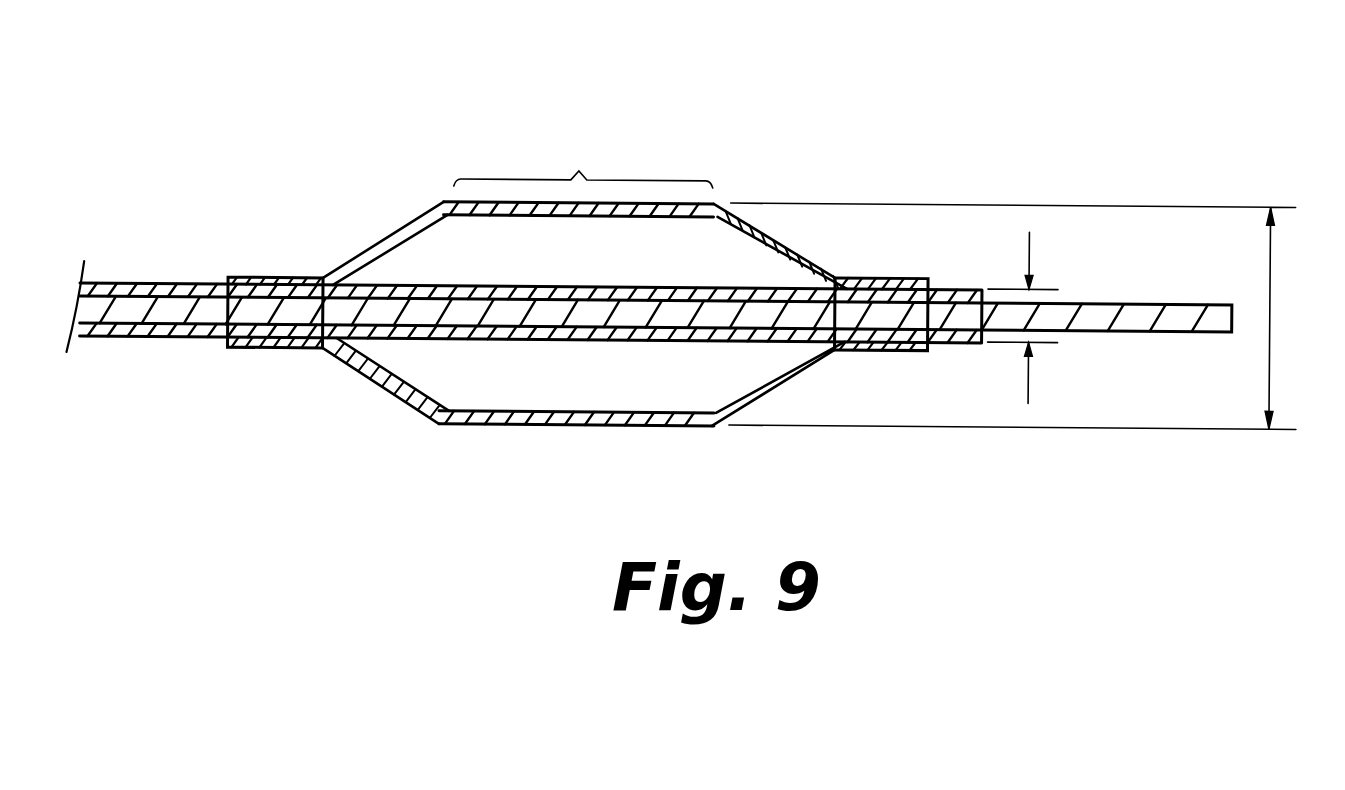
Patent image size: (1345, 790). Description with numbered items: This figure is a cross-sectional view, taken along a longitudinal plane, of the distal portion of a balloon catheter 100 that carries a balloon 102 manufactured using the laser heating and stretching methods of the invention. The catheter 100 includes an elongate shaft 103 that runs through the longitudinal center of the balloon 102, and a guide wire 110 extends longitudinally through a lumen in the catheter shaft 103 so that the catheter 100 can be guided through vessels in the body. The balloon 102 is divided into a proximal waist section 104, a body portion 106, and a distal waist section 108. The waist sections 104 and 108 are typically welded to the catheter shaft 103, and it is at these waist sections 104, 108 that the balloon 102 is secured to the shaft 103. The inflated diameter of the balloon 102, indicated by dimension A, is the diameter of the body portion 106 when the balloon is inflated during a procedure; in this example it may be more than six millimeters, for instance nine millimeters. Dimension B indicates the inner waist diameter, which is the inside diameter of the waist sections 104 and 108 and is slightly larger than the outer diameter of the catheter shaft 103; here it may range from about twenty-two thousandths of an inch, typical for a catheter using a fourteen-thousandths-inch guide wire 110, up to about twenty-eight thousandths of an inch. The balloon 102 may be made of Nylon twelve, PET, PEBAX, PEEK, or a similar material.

The balloon catheter 100 is at (322, 118).
The balloon 102 is at (378, 386).
The elongate shaft 103 is at (185, 337).
The proximal waist section 104 is at (265, 275).
The body portion 106 is at (583, 159).
The distal waist section 108 is at (812, 249).
The guide wire 110 is at (1147, 292).
The dimension A is at (1272, 296).
The dimension B is at (1030, 371).